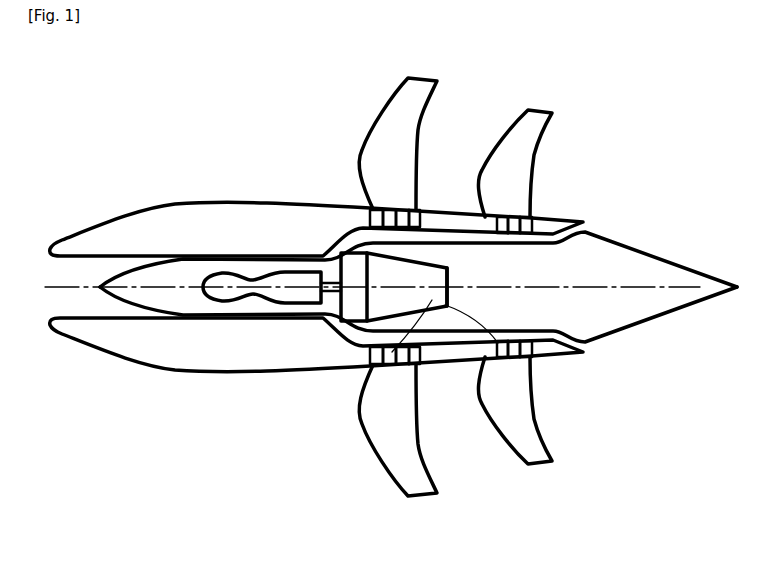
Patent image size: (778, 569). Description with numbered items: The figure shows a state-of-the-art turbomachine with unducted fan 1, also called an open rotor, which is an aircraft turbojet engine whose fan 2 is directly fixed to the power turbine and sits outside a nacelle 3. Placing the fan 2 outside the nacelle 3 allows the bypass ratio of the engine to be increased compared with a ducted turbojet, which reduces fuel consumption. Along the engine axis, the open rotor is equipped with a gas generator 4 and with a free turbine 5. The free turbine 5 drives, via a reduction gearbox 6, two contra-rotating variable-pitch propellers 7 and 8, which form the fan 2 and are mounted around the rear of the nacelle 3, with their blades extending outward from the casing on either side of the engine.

The unducted fan 1 is at (253, 109).
The fan 2 is at (493, 138).
The nacelle 3 is at (132, 217).
The gas generator 4 is at (287, 296).
The free turbine 5 is at (428, 266).
The reduction gearbox 6 is at (443, 303).
The first contra-rotating variable-pitch propeller 7 is at (400, 91).
The second contra-rotating variable-pitch propeller 8 is at (535, 133).